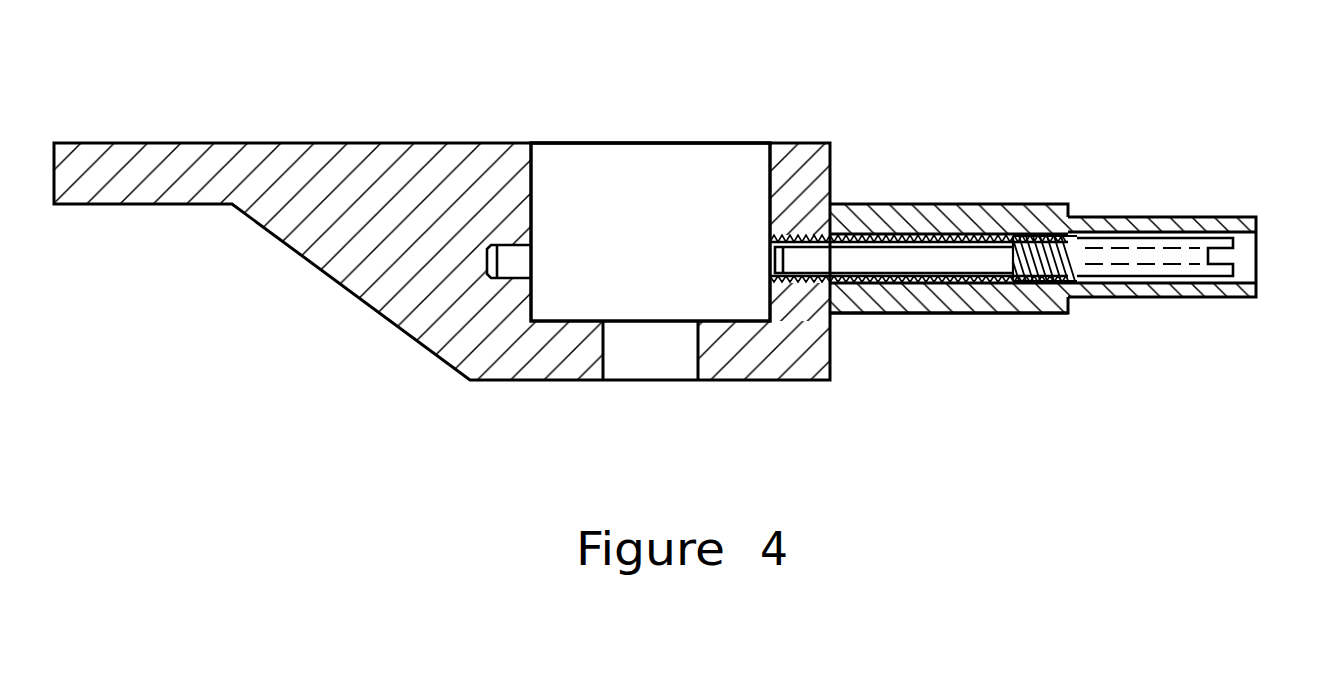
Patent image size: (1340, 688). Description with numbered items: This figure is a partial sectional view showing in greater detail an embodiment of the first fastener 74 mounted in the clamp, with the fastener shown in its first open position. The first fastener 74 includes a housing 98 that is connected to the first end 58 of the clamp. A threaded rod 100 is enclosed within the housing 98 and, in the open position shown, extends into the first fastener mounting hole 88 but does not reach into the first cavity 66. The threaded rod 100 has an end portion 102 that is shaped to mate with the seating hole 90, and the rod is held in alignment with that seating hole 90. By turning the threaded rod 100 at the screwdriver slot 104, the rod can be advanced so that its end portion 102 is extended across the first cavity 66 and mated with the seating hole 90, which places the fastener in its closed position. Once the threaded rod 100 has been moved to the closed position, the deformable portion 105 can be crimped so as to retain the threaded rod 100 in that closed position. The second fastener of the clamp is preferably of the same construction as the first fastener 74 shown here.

The first end 58 is at (830, 178).
The first cavity 66 is at (702, 185).
The first fastener 74 is at (985, 338).
The first fastener mounting hole 88 is at (770, 247).
The seating hole 90 is at (523, 265).
The housing 98 is at (890, 303).
The threaded rod 100 is at (977, 248).
The end portion 102 is at (770, 262).
The screwdriver slot 104 is at (1226, 257).
The deformable portion 105 is at (1157, 217).